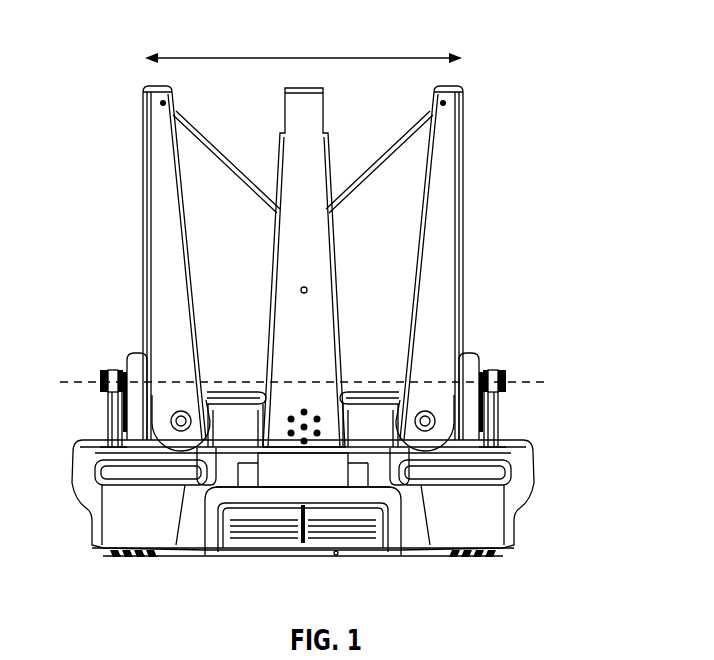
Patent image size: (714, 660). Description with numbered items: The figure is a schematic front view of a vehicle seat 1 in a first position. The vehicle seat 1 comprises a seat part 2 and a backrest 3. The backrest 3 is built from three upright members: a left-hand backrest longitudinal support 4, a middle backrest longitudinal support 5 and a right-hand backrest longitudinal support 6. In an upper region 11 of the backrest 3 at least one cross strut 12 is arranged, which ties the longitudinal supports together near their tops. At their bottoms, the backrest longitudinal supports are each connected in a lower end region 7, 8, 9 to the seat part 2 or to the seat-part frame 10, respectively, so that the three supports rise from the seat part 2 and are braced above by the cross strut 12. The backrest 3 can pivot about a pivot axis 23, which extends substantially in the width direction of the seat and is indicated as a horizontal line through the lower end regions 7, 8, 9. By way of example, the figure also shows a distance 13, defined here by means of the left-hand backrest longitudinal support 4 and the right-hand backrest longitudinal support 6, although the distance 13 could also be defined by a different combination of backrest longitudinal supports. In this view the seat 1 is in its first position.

The vehicle seat 1 is at (507, 44).
The seat part 2 is at (493, 510).
The backrest 3 is at (568, 88).
The left-hand backrest longitudinal support 4 is at (167, 297).
The middle backrest longitudinal support 5 is at (312, 112).
The right-hand backrest longitudinal support 6 is at (447, 240).
The lower end region 7 is at (178, 400).
The lower end region 8 is at (312, 390).
The lower end region 9 is at (442, 402).
The seat-part frame 10 is at (498, 556).
The upper region 11 is at (131, 88).
The cross strut 12 is at (215, 143).
The distance 13 is at (305, 57).
The pivot axis 23 is at (88, 382).